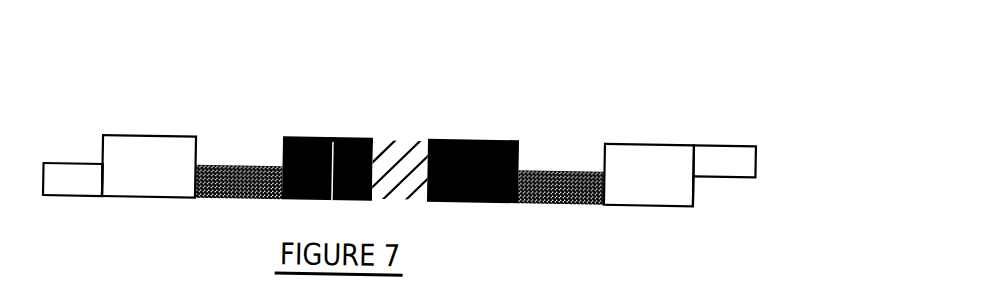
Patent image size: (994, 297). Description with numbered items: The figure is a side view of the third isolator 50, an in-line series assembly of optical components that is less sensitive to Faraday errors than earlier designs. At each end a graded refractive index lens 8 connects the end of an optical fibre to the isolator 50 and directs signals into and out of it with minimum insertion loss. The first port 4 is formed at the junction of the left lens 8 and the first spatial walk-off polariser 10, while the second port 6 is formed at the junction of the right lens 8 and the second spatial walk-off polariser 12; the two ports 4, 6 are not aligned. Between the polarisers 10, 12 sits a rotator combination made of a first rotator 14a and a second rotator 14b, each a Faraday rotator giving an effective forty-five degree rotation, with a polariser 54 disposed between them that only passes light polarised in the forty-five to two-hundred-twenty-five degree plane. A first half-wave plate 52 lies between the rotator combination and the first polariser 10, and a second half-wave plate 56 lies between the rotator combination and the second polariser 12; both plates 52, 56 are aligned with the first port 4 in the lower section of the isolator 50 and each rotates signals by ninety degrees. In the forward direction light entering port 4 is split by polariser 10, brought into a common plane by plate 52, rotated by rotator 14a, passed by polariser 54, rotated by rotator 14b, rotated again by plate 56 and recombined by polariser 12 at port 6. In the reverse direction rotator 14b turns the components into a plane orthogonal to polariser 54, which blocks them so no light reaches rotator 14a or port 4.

The third isolator 50 is at (755, 57).
The graded refractive index lens 8 is at (62, 133).
The first spatial walk-off polariser 10 is at (152, 133).
The second spatial walk-off polariser 12 is at (674, 133).
The first half-wave plate 52 is at (236, 137).
The second half-wave plate 56 is at (559, 137).
The first rotator 14a is at (314, 133).
The second rotator 14b is at (487, 133).
The polariser 54 is at (402, 133).
The first port 4 is at (102, 179).
The second port 6 is at (693, 151).